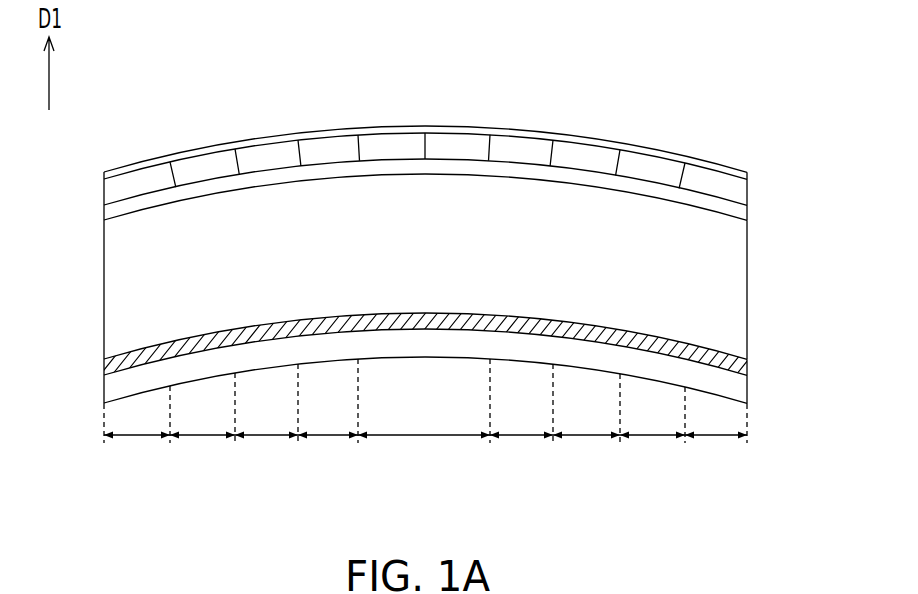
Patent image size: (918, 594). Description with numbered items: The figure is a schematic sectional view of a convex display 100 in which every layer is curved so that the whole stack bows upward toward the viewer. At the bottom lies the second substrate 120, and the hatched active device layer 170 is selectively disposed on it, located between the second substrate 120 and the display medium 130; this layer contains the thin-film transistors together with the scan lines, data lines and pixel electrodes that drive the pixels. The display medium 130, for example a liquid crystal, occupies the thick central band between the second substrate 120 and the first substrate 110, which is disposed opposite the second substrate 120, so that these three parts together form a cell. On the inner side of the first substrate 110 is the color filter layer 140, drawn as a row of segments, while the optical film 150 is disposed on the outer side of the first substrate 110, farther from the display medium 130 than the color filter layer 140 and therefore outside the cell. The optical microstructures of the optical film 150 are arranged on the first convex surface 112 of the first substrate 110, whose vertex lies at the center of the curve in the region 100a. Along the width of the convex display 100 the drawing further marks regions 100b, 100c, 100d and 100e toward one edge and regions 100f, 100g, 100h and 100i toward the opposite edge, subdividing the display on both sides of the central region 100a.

The convex display 100 is at (811, 530).
The first convex surface 112 is at (711, 166).
The optical film 150 is at (454, 148).
The first substrate 110 is at (733, 190).
The color filter layer 140 is at (728, 210).
The display medium 130 is at (718, 292).
The active device layer 170 is at (732, 368).
The second substrate 120 is at (725, 386).
The region 100a is at (424, 454).
The region 100b is at (521, 454).
The region 100c is at (586, 454).
The region 100d is at (652, 454).
The edge region 100e is at (716, 454).
The region 100f is at (328, 454).
The region 100g is at (266, 454).
The region 100h is at (202, 454).
The edge region 100i is at (137, 454).